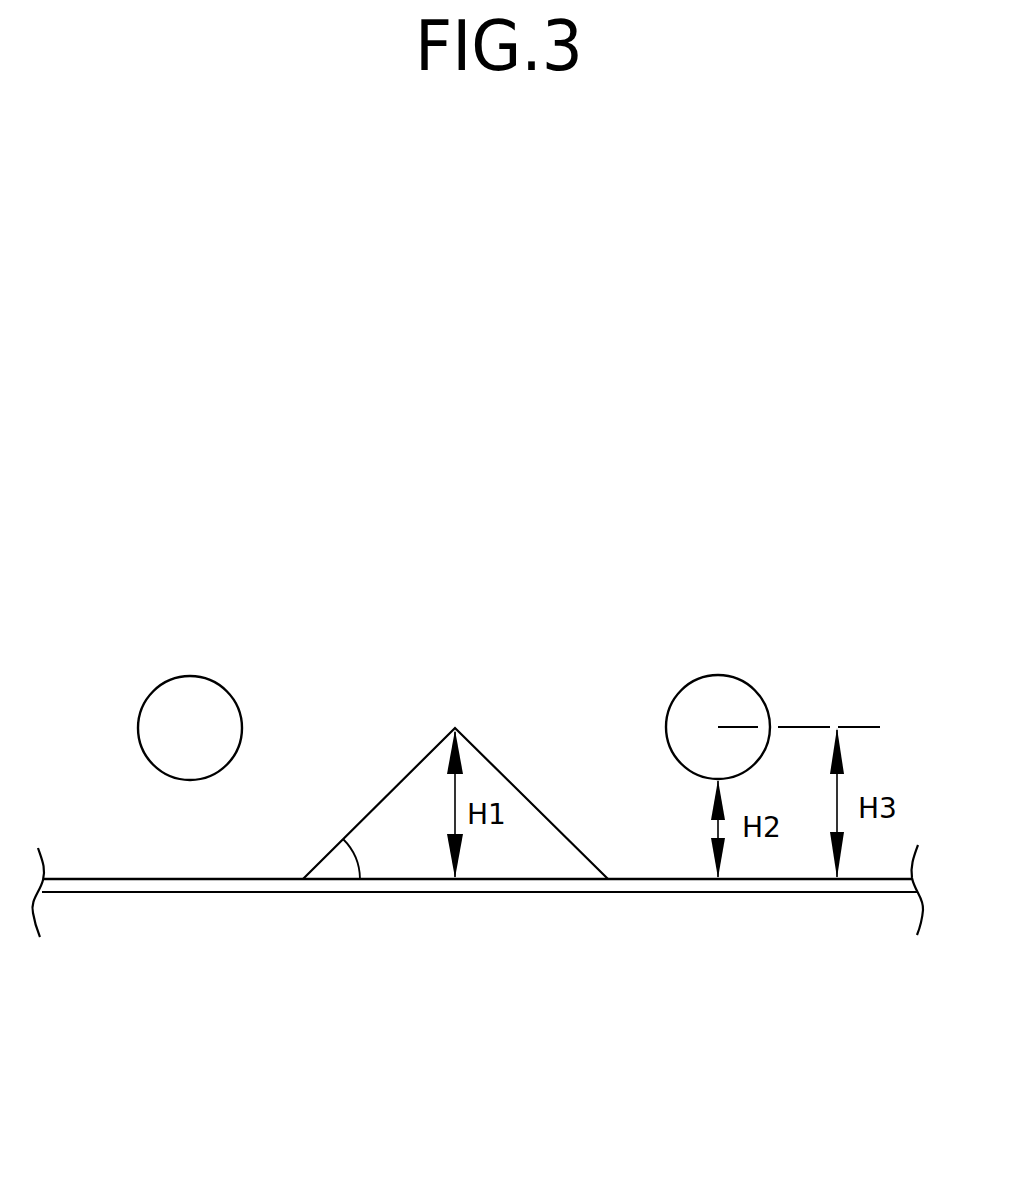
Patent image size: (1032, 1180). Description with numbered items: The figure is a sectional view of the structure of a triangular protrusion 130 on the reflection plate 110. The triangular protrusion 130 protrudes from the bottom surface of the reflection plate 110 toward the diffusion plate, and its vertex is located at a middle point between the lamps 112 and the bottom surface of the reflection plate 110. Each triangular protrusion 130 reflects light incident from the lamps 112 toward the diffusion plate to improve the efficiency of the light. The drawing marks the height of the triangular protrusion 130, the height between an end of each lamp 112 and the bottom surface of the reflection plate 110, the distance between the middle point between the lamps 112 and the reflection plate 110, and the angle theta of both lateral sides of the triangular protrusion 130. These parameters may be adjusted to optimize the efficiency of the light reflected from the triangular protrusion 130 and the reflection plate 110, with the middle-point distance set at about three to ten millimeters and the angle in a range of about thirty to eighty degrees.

The reflection plate 110 is at (697, 883).
The lamp 112 is at (222, 708).
The triangular protrusion 130 is at (508, 852).